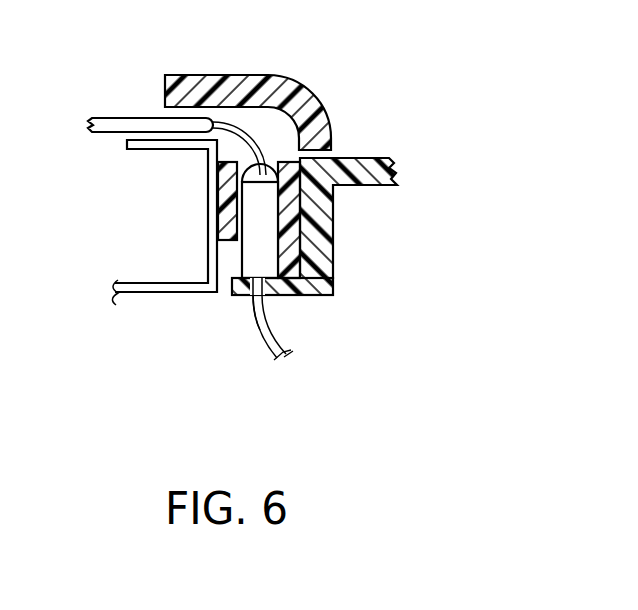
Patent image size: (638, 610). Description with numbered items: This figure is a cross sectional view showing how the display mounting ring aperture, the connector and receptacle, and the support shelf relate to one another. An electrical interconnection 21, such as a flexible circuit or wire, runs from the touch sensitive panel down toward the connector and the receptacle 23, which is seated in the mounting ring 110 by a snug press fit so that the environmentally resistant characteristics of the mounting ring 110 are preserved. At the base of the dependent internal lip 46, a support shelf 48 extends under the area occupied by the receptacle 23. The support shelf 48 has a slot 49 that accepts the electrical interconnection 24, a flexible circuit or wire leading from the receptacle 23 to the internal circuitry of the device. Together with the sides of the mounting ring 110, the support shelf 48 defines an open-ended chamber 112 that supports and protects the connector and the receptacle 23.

The electrical interconnection 21 is at (250, 140).
The dependent internal lip 46 is at (360, 157).
The mounting ring 110 is at (278, 220).
The open-ended chamber 112 is at (228, 268).
The receptacle 23 is at (265, 267).
The support shelf 48 is at (305, 298).
The slot 49 is at (252, 302).
The electrical interconnection 24 is at (272, 350).